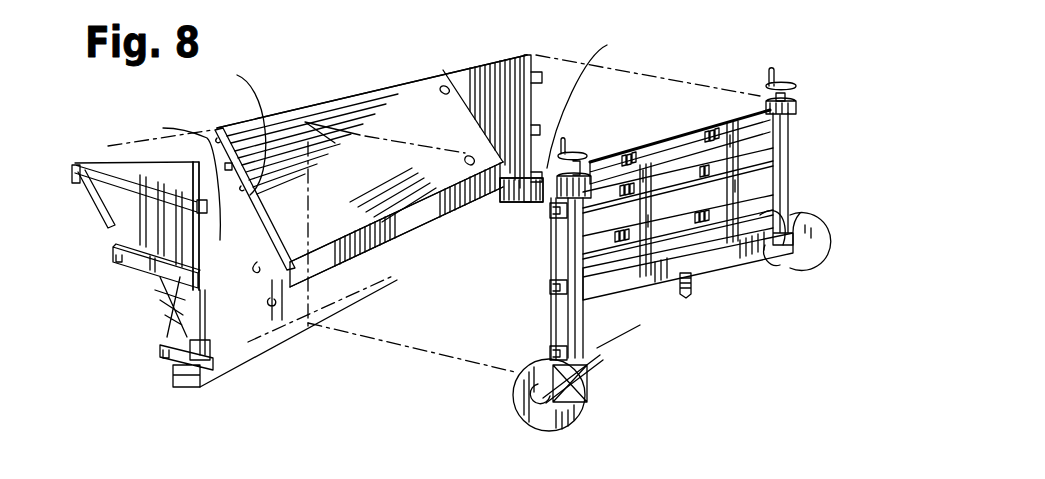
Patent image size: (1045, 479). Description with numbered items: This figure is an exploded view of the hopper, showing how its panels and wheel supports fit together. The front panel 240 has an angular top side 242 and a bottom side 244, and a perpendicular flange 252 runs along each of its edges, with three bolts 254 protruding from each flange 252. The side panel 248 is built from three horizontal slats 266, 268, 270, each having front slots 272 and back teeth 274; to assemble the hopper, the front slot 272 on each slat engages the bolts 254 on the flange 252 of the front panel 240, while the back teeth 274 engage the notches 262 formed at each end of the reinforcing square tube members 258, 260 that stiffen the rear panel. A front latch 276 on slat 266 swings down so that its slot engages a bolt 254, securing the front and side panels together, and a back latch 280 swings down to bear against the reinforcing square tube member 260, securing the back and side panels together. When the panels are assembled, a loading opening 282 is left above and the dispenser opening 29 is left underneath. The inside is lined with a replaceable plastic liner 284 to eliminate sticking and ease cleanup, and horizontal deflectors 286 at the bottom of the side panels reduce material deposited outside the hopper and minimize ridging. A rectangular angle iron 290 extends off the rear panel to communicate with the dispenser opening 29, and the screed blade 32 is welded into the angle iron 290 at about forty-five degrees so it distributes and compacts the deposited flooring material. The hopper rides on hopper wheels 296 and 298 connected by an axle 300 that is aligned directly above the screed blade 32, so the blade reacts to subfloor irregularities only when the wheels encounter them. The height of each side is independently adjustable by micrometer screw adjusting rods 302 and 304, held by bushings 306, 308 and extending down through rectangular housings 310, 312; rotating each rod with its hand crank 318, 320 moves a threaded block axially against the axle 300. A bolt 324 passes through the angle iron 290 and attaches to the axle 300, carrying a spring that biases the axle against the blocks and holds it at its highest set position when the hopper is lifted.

The dispenser opening 29 is at (327, 310).
The screed blade 32 is at (598, 395).
The front panel 240 is at (383, 118).
The angular top side 242 is at (332, 105).
The bottom side 244 is at (400, 243).
The side panel 248 is at (530, 55).
The perpendicular flange 252 is at (234, 126).
The bolts 254 is at (213, 133).
The reinforcing square tube member 258 is at (780, 240).
The reinforcing square tube member 260 is at (770, 268).
The notches 262 is at (556, 282).
The horizontal slat 266 is at (105, 180).
The horizontal slat 268 is at (165, 300).
The horizontal slat 270 is at (183, 388).
The front slots 272 is at (76, 183).
The back teeth 274 is at (228, 410).
The front latch 276 is at (115, 250).
The back latch 280 is at (218, 352).
The loading opening 282 is at (700, 100).
The plastic liner 284 is at (450, 93).
The horizontal deflectors 286 is at (503, 195).
The angle iron 290 is at (692, 300).
The hopper wheel 296 is at (530, 418).
The hopper wheel 298 is at (820, 255).
The axle 300 is at (590, 372).
The micrometer screw adjusting rod 302 is at (592, 162).
The micrometer screw adjusting rod 304 is at (795, 96).
The bushing 306 is at (588, 175).
The bushing 308 is at (795, 112).
The rectangular housing 310 is at (568, 312).
The rectangular housing 312 is at (793, 165).
The hand crank 318 is at (577, 150).
The hand crank 320 is at (782, 80).
The bolt 324 is at (691, 287).